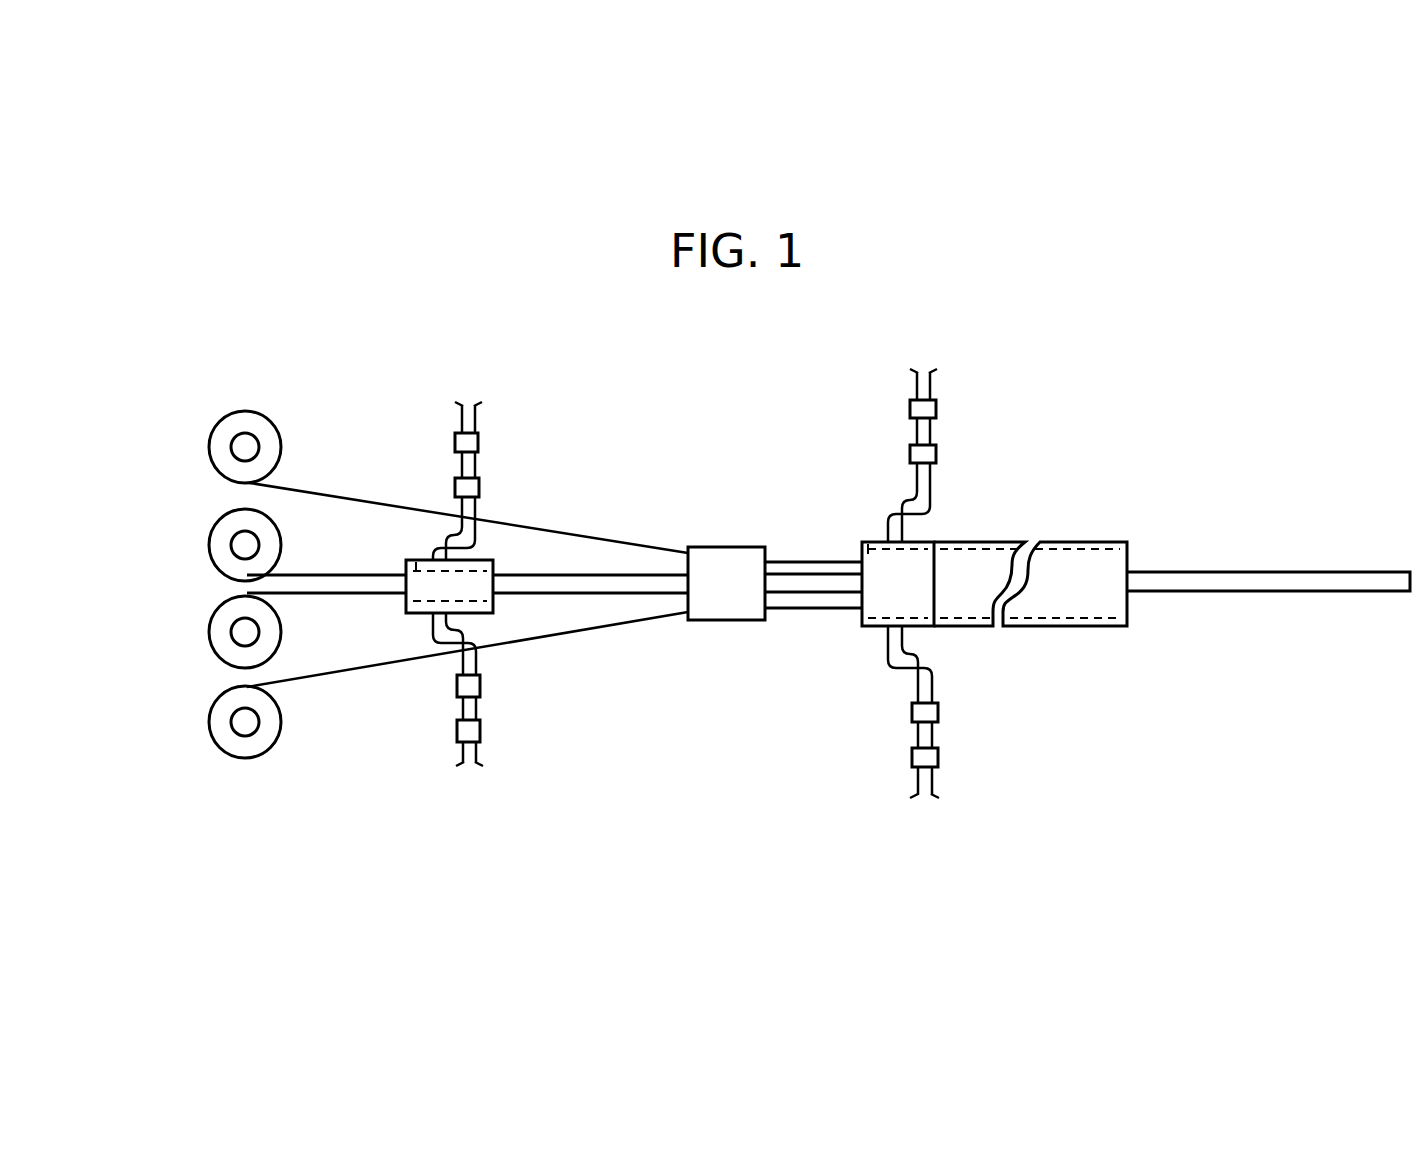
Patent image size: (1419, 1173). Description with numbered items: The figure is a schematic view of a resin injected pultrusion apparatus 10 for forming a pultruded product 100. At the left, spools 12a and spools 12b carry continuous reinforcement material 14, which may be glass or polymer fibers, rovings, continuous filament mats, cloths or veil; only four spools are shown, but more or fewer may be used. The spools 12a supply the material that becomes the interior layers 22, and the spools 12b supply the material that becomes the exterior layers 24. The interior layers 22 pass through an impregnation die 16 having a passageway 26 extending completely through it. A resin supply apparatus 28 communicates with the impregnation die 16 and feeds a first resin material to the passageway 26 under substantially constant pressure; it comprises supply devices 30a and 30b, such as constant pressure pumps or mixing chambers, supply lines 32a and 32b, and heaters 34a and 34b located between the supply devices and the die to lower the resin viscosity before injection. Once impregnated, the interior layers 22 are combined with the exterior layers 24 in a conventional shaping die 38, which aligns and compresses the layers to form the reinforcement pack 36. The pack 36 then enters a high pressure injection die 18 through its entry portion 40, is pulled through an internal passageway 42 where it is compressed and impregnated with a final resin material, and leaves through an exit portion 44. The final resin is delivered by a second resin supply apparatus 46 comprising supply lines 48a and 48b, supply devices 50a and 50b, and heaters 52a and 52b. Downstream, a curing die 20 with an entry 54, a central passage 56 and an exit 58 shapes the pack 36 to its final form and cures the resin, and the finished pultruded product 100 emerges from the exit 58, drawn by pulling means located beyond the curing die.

The resin injected pultrusion apparatus 10 is at (645, 392).
The spools 12a is at (211, 556).
The spools 12b is at (210, 453).
The continuous reinforcement material 14 is at (328, 478).
The impregnation die 16 is at (420, 614).
The high pressure injection die 18 is at (912, 598).
The curing die 20 is at (1068, 574).
The interior layers 22 is at (578, 593).
The exterior layers 24 is at (617, 542).
The passageway 26 is at (418, 562).
The resin supply apparatus 28 is at (497, 588).
The supply device 30a is at (470, 442).
The supply device 30b is at (479, 731).
The supply line 32a is at (462, 420).
The supply line 32b is at (460, 755).
The heater 34a is at (457, 681).
The heater 34b is at (456, 487).
The reinforcement pack 36 is at (800, 583).
The shaping die 38 is at (741, 597).
The entry portion 40 is at (860, 614).
The internal passageway 42 is at (873, 543).
The exit portion 44 is at (935, 542).
The resin supply apparatus 46 is at (910, 576).
The supply line 48a is at (917, 483).
The supply line 48b is at (917, 688).
The supply device 50a is at (912, 409).
The supply device 50b is at (913, 758).
The heater 52a is at (912, 453).
The heater 52b is at (913, 714).
The entry 54 is at (935, 627).
The central passage 56 is at (1062, 562).
The exit 58 is at (1127, 555).
The pultruded product 100 is at (1258, 578).